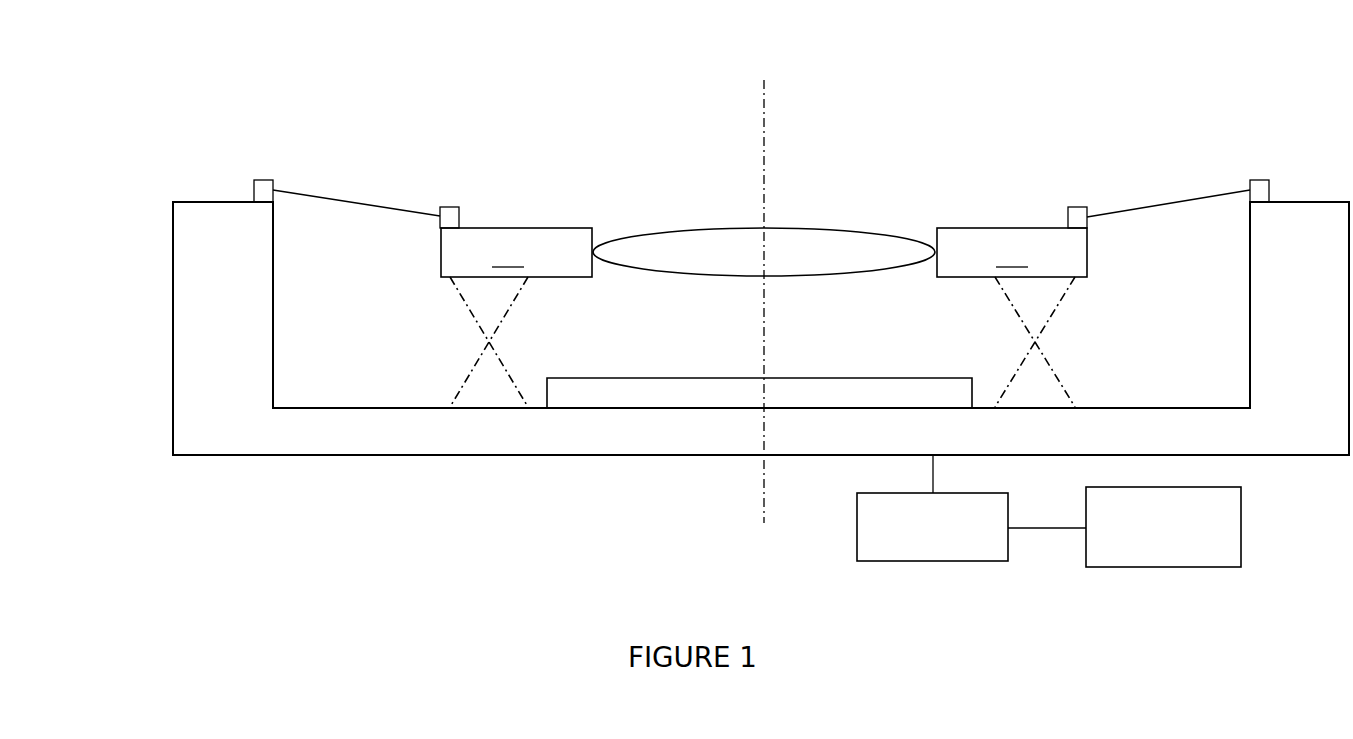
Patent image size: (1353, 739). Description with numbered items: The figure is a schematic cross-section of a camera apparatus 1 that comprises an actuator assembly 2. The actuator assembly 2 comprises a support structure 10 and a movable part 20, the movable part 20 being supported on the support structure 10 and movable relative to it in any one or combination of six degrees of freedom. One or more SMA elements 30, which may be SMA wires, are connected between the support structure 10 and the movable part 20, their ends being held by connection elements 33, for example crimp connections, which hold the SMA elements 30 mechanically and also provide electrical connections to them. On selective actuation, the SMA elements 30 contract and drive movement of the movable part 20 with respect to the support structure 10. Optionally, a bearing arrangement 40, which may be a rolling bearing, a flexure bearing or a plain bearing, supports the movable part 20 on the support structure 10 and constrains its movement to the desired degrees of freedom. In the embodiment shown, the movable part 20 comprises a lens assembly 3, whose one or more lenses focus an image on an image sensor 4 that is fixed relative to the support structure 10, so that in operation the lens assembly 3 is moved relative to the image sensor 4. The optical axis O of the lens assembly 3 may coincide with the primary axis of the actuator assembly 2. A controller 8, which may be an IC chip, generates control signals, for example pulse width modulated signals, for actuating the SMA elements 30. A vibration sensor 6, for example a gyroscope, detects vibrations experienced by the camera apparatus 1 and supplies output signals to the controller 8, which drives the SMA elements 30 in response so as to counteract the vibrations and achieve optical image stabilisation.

The camera apparatus 1 is at (199, 502).
The actuator assembly 2 is at (184, 185).
The lens assembly 3 is at (825, 247).
The image sensor 4 is at (806, 395).
The vibration sensor 6 is at (1185, 553).
The controller 8 is at (878, 527).
The support structure 10 is at (192, 416).
The movable part 20 is at (764, 252).
The SMA element 30 is at (346, 198).
The connection element 33 is at (263, 177).
The bearing arrangement 40 is at (480, 328).
The optical axis O is at (778, 296).